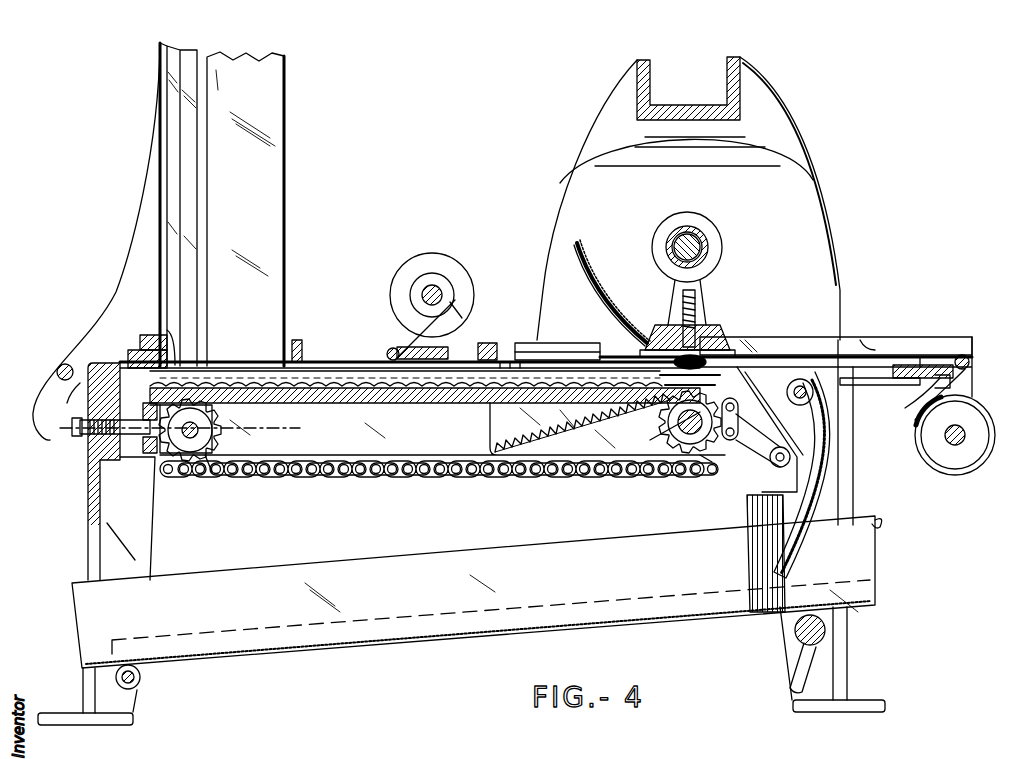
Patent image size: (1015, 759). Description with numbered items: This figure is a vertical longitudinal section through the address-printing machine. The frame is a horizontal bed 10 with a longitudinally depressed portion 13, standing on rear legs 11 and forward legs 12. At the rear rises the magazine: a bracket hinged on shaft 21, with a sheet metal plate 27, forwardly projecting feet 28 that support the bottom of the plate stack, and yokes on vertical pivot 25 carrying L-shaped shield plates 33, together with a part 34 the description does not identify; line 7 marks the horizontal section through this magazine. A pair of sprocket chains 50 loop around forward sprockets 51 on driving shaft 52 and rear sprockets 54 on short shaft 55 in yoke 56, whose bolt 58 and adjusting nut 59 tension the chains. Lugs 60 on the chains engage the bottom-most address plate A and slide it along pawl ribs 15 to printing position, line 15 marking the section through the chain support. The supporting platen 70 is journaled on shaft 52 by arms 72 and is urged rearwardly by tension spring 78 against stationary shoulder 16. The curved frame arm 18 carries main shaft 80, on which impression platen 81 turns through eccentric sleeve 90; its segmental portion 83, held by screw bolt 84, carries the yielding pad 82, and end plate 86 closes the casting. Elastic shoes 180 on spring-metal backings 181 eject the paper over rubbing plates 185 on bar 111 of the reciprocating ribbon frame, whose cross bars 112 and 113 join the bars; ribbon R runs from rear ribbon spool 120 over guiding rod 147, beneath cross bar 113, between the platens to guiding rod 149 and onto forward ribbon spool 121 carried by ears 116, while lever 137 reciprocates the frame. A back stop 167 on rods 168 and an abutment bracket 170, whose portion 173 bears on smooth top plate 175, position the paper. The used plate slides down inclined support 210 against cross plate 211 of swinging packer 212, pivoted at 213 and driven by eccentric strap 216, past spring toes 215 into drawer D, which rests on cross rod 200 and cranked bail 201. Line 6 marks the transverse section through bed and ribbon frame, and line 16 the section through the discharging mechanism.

The section line 7- 7 is at (330, 196).
The sheet metal plate 27 is at (162, 130).
The vertical pivot 25 is at (96, 243).
The shield plate 33 is at (245, 209).
The plate edge 34 is at (286, 128).
The rear legs 11 is at (121, 471).
The rods 168 is at (345, 360).
The pawl ribs 15 is at (300, 362).
The depressed portion 13 is at (417, 404).
The bed 10 is at (455, 404).
The short shaft 55 is at (190, 438).
The sprockets 54 is at (212, 480).
The yoke 56 is at (160, 460).
The bolt 58 is at (148, 440).
The adjusting nut 59 is at (82, 440).
The feet 28 is at (172, 352).
The shaft 21 is at (68, 363).
The sprocket chains 50 is at (540, 478).
The lugs 60 is at (580, 345).
The tension spring 78 is at (582, 423).
The arms 72 is at (660, 428).
The rear ribbon spool 120 is at (414, 280).
The guiding rod 147 is at (390, 360).
The ribbon R is at (400, 318).
The cross bar 113 is at (480, 358).
The back stop 167 is at (500, 360).
The top plate 175 is at (510, 360).
The bracket 170 is at (520, 360).
The section line 6- 6 is at (502, 532).
The frame arm 18 is at (695, 291).
The end plate 86 is at (700, 222).
The eccentric sleeve 90 is at (705, 230).
The main shaft 80 is at (702, 250).
The screw bolt 84 is at (672, 300).
The segmental portion 83 is at (680, 340).
The impression platen 81 is at (712, 322).
The pad 82 is at (730, 342).
The supporting platen 70 is at (675, 380).
The spring-metal backings 181 is at (597, 283).
The elastic shoes 180 is at (588, 310).
The address plate A is at (245, 350).
The stationary shoulder 16 is at (735, 690).
The parallel bar 111 is at (812, 336).
The depending portion 173 is at (865, 340).
The cross bar 112 is at (900, 365).
The rubbing plates 185 is at (922, 357).
The guiding rod 149 is at (963, 355).
The lever 137 is at (875, 385).
The ears 116 is at (930, 382).
The forward ribbon spool 121 is at (960, 472).
The pivot 213 is at (808, 398).
The swinging packer 212 is at (828, 436).
The cross plate 211 is at (830, 462).
The inclined support 210 is at (748, 412).
The eccentric strap 216 is at (768, 462).
The spring toes 215 is at (778, 498).
The driving shaft 52 is at (690, 452).
The sprockets 51 is at (714, 470).
The drawer D is at (477, 592).
The cross rod 200 is at (141, 677).
The cranked bail 201 is at (815, 655).
The forward legs 12 is at (852, 688).